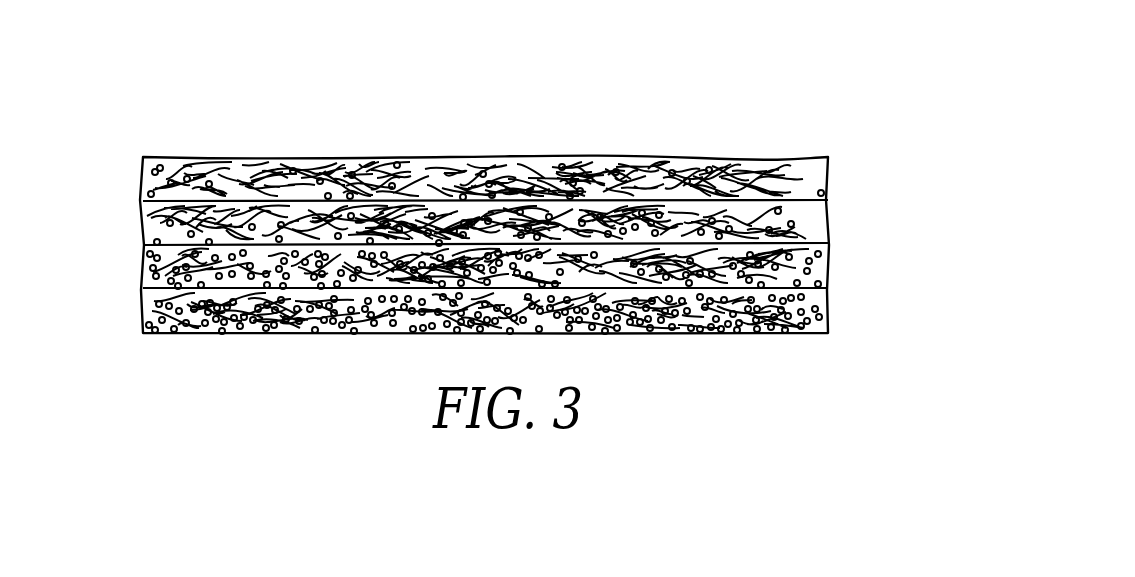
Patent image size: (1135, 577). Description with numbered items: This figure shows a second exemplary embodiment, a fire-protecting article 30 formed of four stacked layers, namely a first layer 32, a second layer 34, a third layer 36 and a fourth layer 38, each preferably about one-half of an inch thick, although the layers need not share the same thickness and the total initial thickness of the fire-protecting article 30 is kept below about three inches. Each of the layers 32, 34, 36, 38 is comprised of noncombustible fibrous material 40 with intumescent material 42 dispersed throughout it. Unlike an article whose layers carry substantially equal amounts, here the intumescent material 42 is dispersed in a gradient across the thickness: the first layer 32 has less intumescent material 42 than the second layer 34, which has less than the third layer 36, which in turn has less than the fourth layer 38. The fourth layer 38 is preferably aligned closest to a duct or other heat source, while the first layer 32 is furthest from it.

The fire-protecting article 30 is at (808, 66).
The first layer 32 is at (493, 144).
The second layer 34 is at (832, 226).
The third layer 36 is at (832, 270).
The fourth layer 38 is at (832, 313).
The noncombustible fibrous material 40 is at (206, 167).
The intumescent material 42 is at (147, 173).